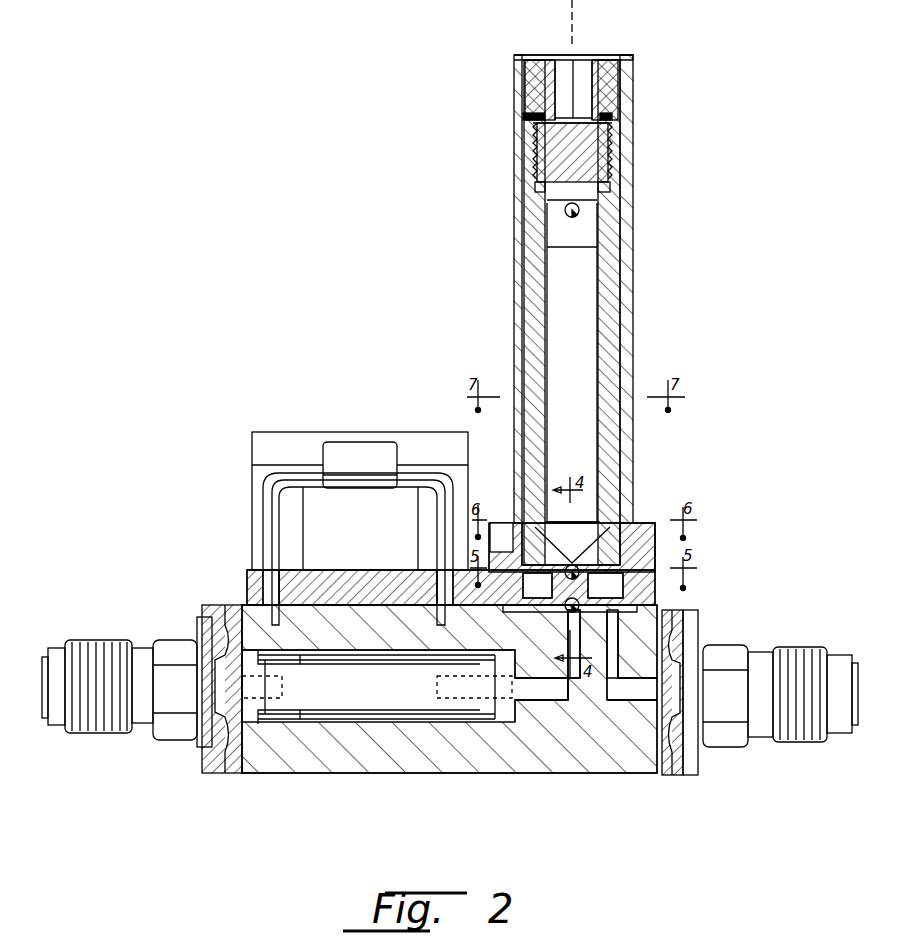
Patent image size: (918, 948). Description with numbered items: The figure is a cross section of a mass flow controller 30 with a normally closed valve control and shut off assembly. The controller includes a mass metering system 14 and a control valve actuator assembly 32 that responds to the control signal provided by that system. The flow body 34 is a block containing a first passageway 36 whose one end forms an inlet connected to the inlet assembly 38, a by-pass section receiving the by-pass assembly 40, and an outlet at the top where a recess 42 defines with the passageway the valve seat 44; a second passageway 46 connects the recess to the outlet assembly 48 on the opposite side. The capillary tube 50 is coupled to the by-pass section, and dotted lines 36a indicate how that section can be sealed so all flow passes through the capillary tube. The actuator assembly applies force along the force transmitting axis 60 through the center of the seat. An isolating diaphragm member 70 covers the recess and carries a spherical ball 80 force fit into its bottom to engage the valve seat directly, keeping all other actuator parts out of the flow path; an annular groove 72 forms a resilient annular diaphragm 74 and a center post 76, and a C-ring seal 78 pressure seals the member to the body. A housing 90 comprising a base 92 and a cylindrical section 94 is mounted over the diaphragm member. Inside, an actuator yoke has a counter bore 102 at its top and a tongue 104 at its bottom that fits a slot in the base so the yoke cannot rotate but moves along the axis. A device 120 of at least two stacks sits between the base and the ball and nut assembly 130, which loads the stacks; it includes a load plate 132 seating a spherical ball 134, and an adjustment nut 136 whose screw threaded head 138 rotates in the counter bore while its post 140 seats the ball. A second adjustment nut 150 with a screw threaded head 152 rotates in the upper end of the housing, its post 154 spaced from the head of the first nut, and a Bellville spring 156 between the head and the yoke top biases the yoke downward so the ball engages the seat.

The mass metering system 14 is at (232, 470).
The mass flow controller 30 is at (262, 793).
The control valve actuator assembly 32 is at (609, 310).
The flow body 34 is at (603, 773).
The first passageway 36 is at (403, 729).
The dotted lines 36a is at (283, 680).
The inlet assembly 38 is at (105, 640).
The by-pass assembly 40 is at (377, 703).
The recess 42 is at (550, 622).
The valve seat 44 is at (580, 618).
The second passageway 46 is at (640, 700).
The outlet assembly 48 is at (785, 647).
The capillary tube 50 is at (276, 520).
The force transmitting axis 60 is at (575, 25).
The isolating diaphragm member 70 is at (660, 578).
The annular groove 72 is at (648, 580).
The resilient annular diaphragm 74 is at (530, 616).
The center post 76 is at (580, 590).
The C-ring seal 78 is at (580, 603).
The spherical ball 80 is at (560, 640).
The housing 90 is at (636, 328).
The base 92 is at (505, 548).
The cylindrical section 94 is at (623, 303).
The counter bore 102 is at (536, 135).
The tongue 104 is at (576, 568).
The device 120 is at (590, 339).
The ball and nut assembly 130 is at (618, 151).
The load plate 132 is at (553, 222).
The spherical ball 134 is at (560, 208).
The adjustment nut 136 is at (556, 160).
The screw threaded head 138 is at (612, 168).
The post 140 is at (582, 204).
The second adjustment nut 150 is at (624, 78).
The screw threaded head 152 is at (530, 83).
The post 154 is at (540, 112).
The Bellville spring 156 is at (608, 116).